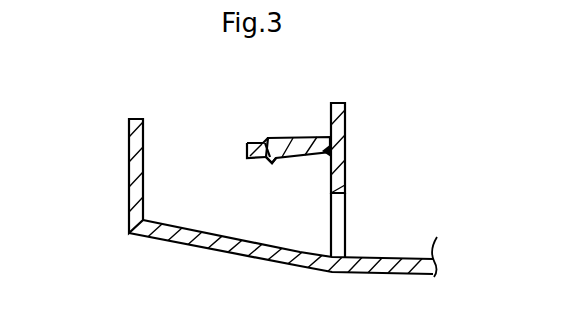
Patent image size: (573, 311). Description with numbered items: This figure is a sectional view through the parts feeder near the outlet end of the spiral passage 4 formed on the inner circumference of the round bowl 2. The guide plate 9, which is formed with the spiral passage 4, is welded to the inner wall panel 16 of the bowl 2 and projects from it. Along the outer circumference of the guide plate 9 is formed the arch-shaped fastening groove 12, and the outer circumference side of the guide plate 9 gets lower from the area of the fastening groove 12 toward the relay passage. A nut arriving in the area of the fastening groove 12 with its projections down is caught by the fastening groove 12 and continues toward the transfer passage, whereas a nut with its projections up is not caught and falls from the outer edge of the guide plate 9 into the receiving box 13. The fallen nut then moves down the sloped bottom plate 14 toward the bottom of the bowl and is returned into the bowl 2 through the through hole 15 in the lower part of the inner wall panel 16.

The bowl 2 is at (407, 187).
The spiral passage 4 is at (316, 135).
The guide plate 9 is at (247, 146).
The fastening groove 12 is at (273, 147).
The receiving box 13 is at (128, 168).
The sloped bottom plate 14 is at (210, 229).
The through hole 15 is at (340, 222).
The inner wall panel 16 is at (347, 112).